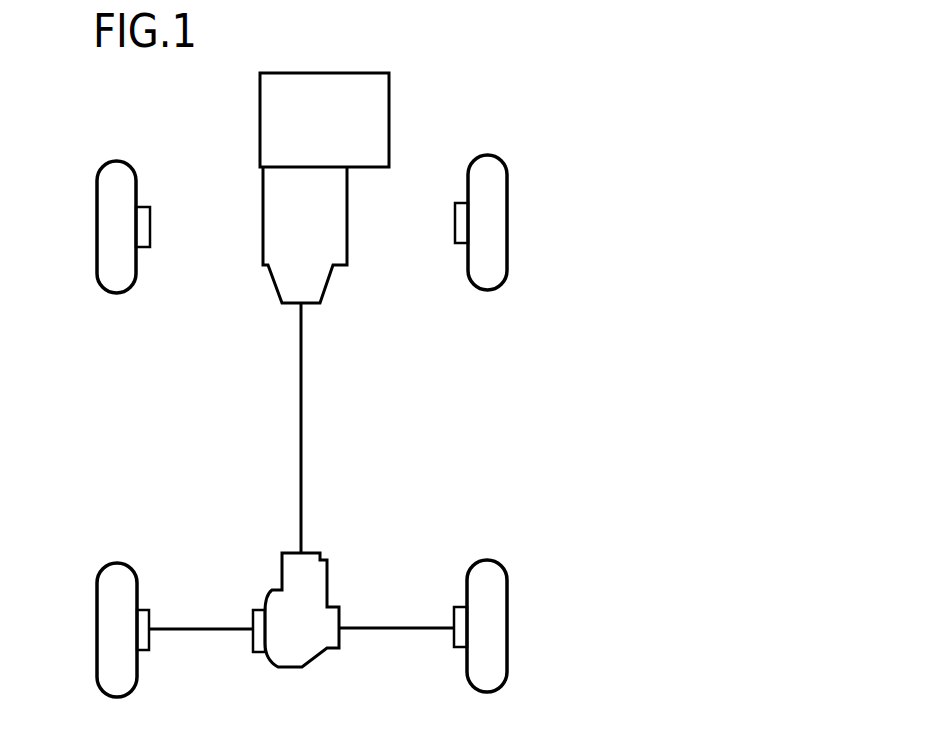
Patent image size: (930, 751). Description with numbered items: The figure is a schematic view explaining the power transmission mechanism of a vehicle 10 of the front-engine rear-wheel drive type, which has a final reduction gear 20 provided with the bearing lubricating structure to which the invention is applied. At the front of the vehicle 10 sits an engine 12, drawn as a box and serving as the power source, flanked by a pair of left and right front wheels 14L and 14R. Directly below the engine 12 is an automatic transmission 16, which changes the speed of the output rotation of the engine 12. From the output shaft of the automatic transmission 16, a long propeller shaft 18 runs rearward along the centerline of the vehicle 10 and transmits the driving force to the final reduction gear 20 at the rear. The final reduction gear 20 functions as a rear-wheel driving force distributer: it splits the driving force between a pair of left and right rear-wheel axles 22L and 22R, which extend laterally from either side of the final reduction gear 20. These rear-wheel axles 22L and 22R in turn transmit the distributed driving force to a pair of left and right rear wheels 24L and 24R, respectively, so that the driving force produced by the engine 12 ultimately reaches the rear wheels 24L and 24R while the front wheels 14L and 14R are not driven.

The vehicle 10 is at (490, 50).
The engine 12 is at (378, 82).
The left front wheel 14L is at (107, 264).
The right front wheel 14R is at (495, 257).
The automatic transmission 16 is at (318, 283).
The propeller shaft 18 is at (302, 442).
The final reduction gear 20 is at (346, 566).
The left rear-wheel axle 22L is at (192, 633).
The right rear-wheel axle 22R is at (392, 630).
The left rear wheel 24L is at (105, 663).
The right rear wheel 24R is at (493, 662).